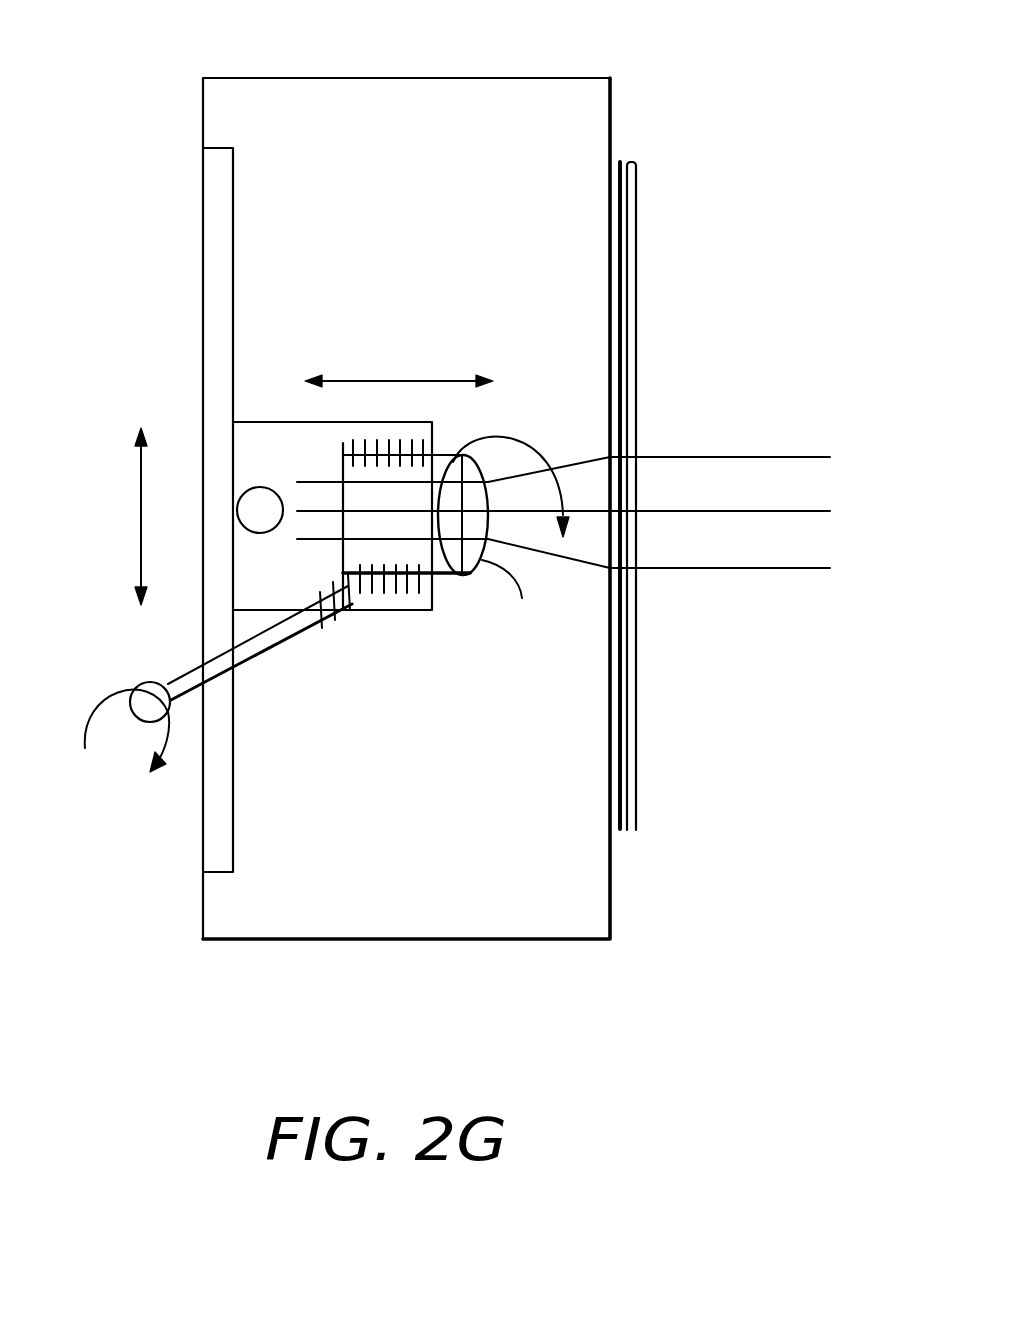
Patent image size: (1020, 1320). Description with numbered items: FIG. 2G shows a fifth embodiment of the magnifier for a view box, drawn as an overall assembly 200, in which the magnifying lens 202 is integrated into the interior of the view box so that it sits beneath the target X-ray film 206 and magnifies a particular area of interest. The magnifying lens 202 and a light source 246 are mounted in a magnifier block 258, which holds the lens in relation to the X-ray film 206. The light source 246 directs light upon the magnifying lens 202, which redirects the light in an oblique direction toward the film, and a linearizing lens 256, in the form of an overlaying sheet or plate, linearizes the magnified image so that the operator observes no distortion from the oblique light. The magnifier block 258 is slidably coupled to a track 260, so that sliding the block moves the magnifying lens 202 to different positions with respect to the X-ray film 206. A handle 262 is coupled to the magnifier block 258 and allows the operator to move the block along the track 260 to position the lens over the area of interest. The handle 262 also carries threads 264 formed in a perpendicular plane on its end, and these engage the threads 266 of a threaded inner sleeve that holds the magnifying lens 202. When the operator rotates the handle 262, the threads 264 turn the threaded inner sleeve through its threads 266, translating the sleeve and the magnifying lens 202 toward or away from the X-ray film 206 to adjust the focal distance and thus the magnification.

The optical scanning assembly 200 is at (413, 33).
The magnifying lens 202 is at (460, 577).
The X-ray film 206 is at (621, 830).
The light source 246 is at (262, 493).
The linearizing lens 256 is at (638, 370).
The magnifier block 258 is at (295, 425).
The track 260 is at (208, 227).
The handle 262 is at (152, 687).
The threads 264 is at (338, 620).
The threads 266 is at (412, 593).